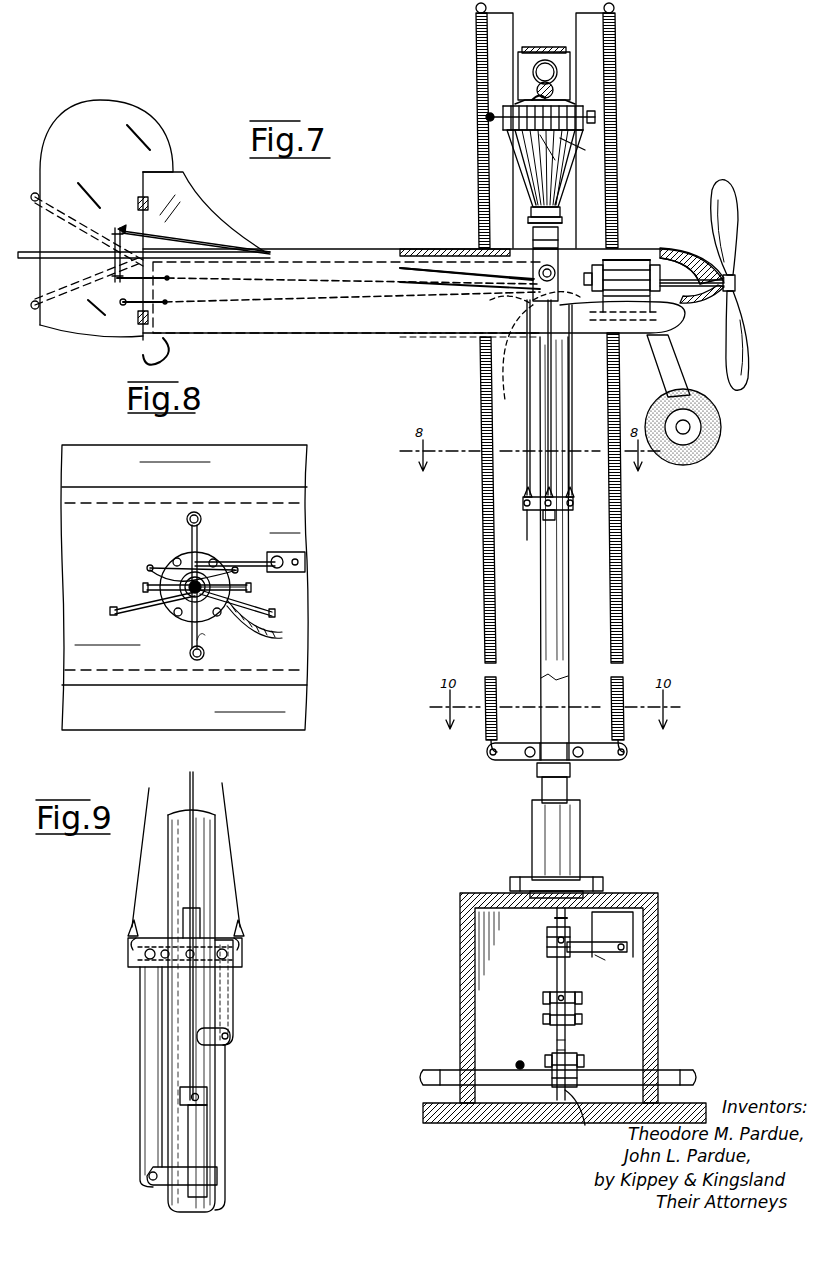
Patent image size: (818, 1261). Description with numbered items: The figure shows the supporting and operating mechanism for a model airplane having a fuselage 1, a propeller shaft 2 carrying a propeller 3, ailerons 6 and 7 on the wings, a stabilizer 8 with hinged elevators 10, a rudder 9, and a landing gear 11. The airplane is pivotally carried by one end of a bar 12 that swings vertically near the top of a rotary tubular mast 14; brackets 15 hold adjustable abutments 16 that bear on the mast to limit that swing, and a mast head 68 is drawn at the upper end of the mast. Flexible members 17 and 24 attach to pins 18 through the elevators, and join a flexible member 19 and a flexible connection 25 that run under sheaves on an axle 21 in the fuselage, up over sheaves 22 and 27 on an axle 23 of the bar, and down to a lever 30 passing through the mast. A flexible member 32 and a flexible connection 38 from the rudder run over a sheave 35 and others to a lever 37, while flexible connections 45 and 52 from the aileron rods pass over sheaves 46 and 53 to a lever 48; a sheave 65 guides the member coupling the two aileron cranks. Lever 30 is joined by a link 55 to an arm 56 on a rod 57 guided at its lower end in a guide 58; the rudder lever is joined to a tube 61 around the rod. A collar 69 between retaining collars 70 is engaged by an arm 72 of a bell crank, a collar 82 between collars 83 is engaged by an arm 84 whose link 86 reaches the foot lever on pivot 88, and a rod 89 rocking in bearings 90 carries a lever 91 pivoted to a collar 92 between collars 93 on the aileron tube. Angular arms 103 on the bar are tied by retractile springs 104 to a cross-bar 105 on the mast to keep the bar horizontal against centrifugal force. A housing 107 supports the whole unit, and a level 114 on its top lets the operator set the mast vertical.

In FIG. 7, the fuselage 1 is at (355, 322).
In FIG. 7, the propeller shaft 2 is at (678, 262).
In FIG. 7, the propeller 3 is at (735, 210).
In FIG. 7, the aileron 6 is at (513, 388).
In FIG. 7, the aileron 7 is at (635, 262).
In FIG. 7, the stabilizer 8 is at (198, 253).
In FIG. 7, the rudder 9 is at (125, 118).
In FIG. 7, the elevators 10 is at (57, 251).
In FIG. 7, the landing gear 11 is at (705, 440).
In FIG. 7, the bar 12 is at (560, 138).
In FIG. 7, the mast 14 is at (552, 586).
In FIG. 8, the mast 14 is at (172, 608).
In FIG. 9, the mast 14 is at (205, 862).
In FIG. 7, the brackets 15 is at (555, 92).
In FIG. 7, the abutments 16 is at (559, 76).
In FIG. 7, the flexible members 17 is at (178, 238).
In FIG. 7, the pins 18 is at (117, 230).
In FIG. 7, the flexible member 19 is at (436, 265).
In FIG. 8, the flexible member 19 is at (150, 565).
In FIG. 7, the axle 21 is at (539, 272).
In FIG. 7, the sheave 22 is at (503, 107).
In FIG. 7, the axle 23 is at (596, 115).
In FIG. 7, the flexible members 24 is at (150, 280).
In FIG. 7, the flexible connection 25 is at (573, 398).
In FIG. 8, the flexible connection 25 is at (238, 562).
In FIG. 9, the flexible connection 25 is at (226, 803).
In FIG. 7, the sheave 27 is at (575, 104).
In FIG. 7, the lever 30 is at (572, 506).
In FIG. 8, the lever 30 is at (175, 578).
In FIG. 9, the lever 30 is at (243, 953).
In FIG. 8, the flexible member 32 is at (144, 587).
In FIG. 7, the sheave 35 is at (507, 135).
In FIG. 7, the lever 37 is at (556, 515).
In FIG. 9, the lever 37 is at (196, 952).
In FIG. 7, the flexible connection 38 is at (552, 466).
In FIG. 8, the flexible connection 38 is at (248, 586).
In FIG. 9, the flexible connection 38 is at (193, 780).
In FIG. 7, the flexible connection 45 is at (528, 428).
In FIG. 8, the flexible connection 45 is at (275, 612).
In FIG. 9, the flexible connection 45 is at (139, 850).
In FIG. 7, the sheave 46 is at (533, 100).
In FIG. 7, the lever 48 is at (527, 512).
In FIG. 8, the lever 48 is at (260, 610).
In FIG. 9, the lever 48 is at (138, 970).
In FIG. 8, the flexible connection 52 is at (117, 616).
In FIG. 7, the sheave 53 is at (555, 160).
In FIG. 9, the link 55 is at (233, 986).
In FIG. 9, the arm 56 is at (212, 1030).
In FIG. 7, the rod 57 is at (566, 1040).
In FIG. 8, the rod 57 is at (160, 577).
In FIG. 7, the guide 58 is at (554, 1118).
In FIG. 7, the tube 61 is at (566, 979).
In FIG. 7, the sheave 65 is at (555, 920).
In FIG. 7, the mast head 68 is at (535, 235).
In FIG. 7, the collar 69 is at (578, 1077).
In FIG. 7, the retaining collars 70 is at (584, 1058).
In FIG. 7, the arm 72 is at (556, 1052).
In FIG. 7, the collar 82 is at (553, 1012).
In FIG. 7, the retaining collars 83 is at (546, 1000).
In FIG. 7, the arm 84 is at (545, 1000).
In FIG. 7, the link 86 is at (520, 1061).
In FIG. 7, the pivot 88 is at (445, 1070).
In FIG. 7, the rod 89 is at (628, 947).
In FIG. 7, the supporting bearings 90 is at (633, 925).
In FIG. 7, the lever 91 is at (595, 955).
In FIG. 7, the collar 92 is at (565, 940).
In FIG. 7, the retaining collars 93 is at (547, 948).
In FIG. 7, the angular arms 103 is at (576, 22).
In FIG. 7, the springs 104 is at (484, 572).
In FIG. 8, the springs 104 is at (201, 517).
In FIG. 7, the cross-bar 105 is at (597, 760).
In FIG. 8, the cross-bar 105 is at (200, 635).
In FIG. 7, the housing 107 is at (658, 1005).
In FIG. 8, the housing 107 is at (165, 715).
In FIG. 7, the level 114 is at (598, 878).